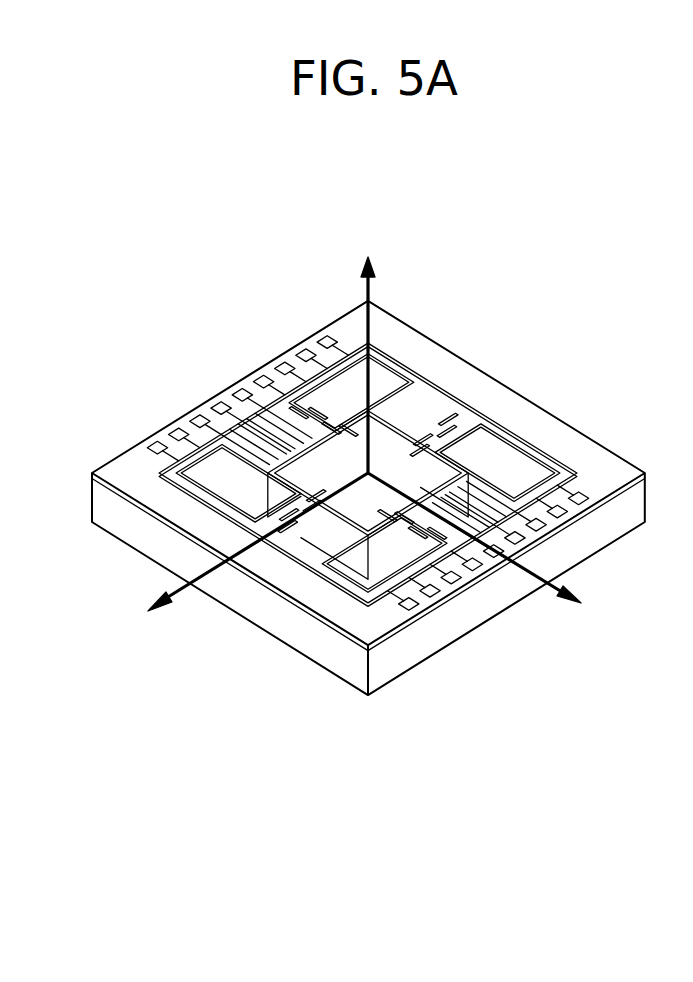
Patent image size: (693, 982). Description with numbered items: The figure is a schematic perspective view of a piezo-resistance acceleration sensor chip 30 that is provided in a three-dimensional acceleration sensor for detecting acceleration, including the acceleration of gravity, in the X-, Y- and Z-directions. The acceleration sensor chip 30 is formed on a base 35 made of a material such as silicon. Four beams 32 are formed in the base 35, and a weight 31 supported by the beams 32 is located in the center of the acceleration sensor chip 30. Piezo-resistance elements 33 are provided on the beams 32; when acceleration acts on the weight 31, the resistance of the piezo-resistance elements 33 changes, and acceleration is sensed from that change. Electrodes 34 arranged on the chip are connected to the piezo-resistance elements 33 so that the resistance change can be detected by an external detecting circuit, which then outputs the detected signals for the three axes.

The acceleration sensor chip 30 is at (426, 297).
The weight 31 is at (343, 553).
The beams 32 is at (505, 445).
The piezo-resistance elements 33 is at (286, 395).
The electrodes 34 is at (318, 338).
The base 35 is at (443, 630).